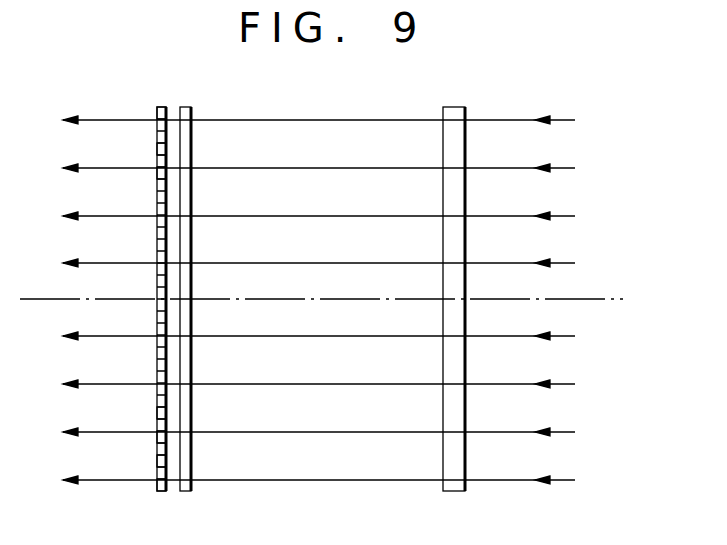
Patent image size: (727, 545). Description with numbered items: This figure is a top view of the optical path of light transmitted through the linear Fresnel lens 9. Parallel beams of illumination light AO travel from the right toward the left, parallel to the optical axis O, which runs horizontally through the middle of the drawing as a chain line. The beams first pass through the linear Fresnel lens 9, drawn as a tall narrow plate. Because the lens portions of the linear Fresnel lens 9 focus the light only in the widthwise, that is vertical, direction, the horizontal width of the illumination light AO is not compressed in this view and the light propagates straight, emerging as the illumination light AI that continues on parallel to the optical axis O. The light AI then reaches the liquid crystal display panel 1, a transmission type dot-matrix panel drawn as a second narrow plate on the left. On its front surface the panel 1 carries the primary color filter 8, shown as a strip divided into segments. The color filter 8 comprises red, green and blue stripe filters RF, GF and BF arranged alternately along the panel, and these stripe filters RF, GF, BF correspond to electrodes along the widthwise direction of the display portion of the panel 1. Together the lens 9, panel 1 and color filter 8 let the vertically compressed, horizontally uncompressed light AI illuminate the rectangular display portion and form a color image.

The liquid crystal display panel 1 is at (185, 107).
The primary color filter 8 is at (159, 107).
The linear Fresnel lens 9 is at (452, 112).
The red stripe filter RF is at (157, 113).
The green stripe filter GF is at (157, 146).
The blue stripe filter BF is at (157, 174).
The elliptical illumination light AI is at (360, 120).
The illumination light AO is at (570, 120).
The optical axis O is at (585, 299).